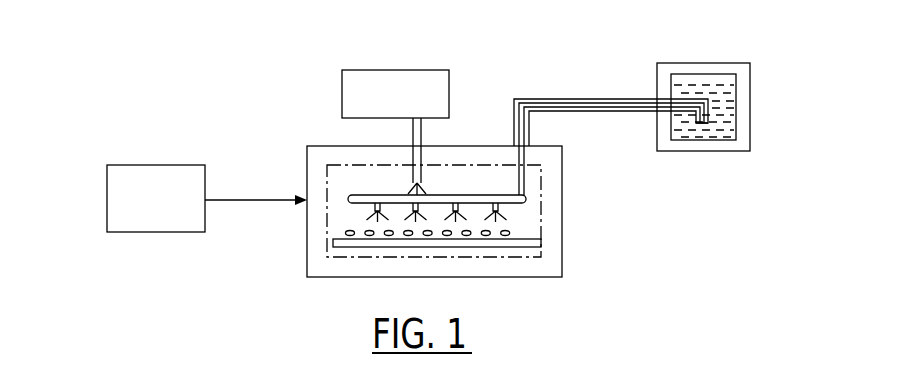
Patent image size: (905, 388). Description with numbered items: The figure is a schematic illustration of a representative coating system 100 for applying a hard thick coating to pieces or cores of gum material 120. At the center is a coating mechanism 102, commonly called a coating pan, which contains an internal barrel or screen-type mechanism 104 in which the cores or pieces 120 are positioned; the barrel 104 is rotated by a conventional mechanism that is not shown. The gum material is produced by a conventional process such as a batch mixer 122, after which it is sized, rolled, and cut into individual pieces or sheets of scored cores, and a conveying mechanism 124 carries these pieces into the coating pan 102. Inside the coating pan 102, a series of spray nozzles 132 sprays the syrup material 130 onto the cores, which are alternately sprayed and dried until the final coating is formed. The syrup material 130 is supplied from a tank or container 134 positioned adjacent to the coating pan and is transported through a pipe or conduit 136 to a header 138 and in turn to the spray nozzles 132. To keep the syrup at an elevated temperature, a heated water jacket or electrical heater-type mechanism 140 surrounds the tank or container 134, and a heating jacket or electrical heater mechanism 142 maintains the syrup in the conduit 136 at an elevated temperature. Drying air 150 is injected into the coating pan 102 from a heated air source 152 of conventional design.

The system 100 is at (152, 30).
The coating mechanism 102 is at (345, 278).
The internal barrel or screen-type mechanism 104 is at (509, 257).
The pieces or cores of gum material 120 is at (346, 233).
The batch mixer 122 is at (166, 233).
The conveying mechanism 124 is at (261, 196).
The syrup material 130 is at (687, 127).
The spray nozzles 132 is at (412, 207).
The tank or container 134 is at (722, 151).
The pipe or conduit 136 is at (558, 100).
The header 138 is at (528, 197).
The heated water jacket or electrical heater-type mechanism 140 is at (750, 110).
The heating jacket or electrical heater mechanism 142 is at (608, 98).
The drying air 150 is at (425, 183).
The heated air source 152 is at (341, 87).